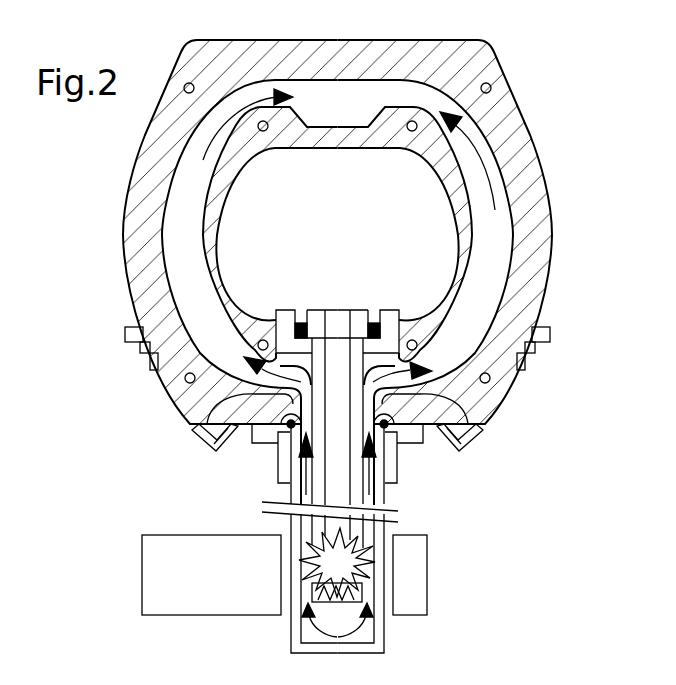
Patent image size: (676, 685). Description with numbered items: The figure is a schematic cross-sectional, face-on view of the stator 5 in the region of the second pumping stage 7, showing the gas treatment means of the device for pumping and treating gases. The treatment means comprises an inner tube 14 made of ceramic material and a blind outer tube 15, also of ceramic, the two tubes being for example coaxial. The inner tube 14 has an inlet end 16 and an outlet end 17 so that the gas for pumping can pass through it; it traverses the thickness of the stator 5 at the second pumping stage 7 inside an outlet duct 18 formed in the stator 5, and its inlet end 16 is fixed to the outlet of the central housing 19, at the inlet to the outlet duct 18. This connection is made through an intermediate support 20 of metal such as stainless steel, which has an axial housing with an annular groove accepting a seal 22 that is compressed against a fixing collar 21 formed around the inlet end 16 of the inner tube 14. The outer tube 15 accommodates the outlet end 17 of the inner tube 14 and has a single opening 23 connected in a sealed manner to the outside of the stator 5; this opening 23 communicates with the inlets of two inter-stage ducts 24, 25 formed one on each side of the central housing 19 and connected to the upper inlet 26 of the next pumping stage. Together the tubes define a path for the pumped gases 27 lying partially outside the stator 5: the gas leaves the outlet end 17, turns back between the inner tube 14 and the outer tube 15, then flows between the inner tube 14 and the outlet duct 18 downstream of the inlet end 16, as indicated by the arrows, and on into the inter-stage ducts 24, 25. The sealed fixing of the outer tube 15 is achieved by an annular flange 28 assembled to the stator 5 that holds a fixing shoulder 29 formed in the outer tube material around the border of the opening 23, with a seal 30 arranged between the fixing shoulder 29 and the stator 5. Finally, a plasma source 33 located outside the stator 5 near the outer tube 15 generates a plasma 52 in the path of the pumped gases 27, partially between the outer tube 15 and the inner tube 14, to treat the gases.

The stator 5 is at (525, 165).
The second pumping stage 7 is at (537, 114).
The inner tube 14 is at (290, 515).
The blind outer tube 15 is at (381, 627).
The inlet end 16 is at (357, 309).
The outlet end 17 is at (362, 590).
The outlet duct 18 is at (197, 442).
The central housing 19 is at (337, 234).
The intermediate support 20 is at (281, 309).
The fixing collar 21 is at (332, 309).
The seal 22 is at (381, 331).
The opening 23 is at (415, 437).
The inter-stage duct 24 is at (180, 208).
The inter-stage duct 25 is at (498, 216).
The upper inlet 26 is at (320, 95).
The path for the pumped gases 27 is at (370, 524).
The annular flange 28 is at (418, 450).
The fixing shoulder 29 is at (297, 506).
The seal 30 is at (267, 443).
The plasma source 33 is at (142, 592).
The plasma 52 is at (309, 562).